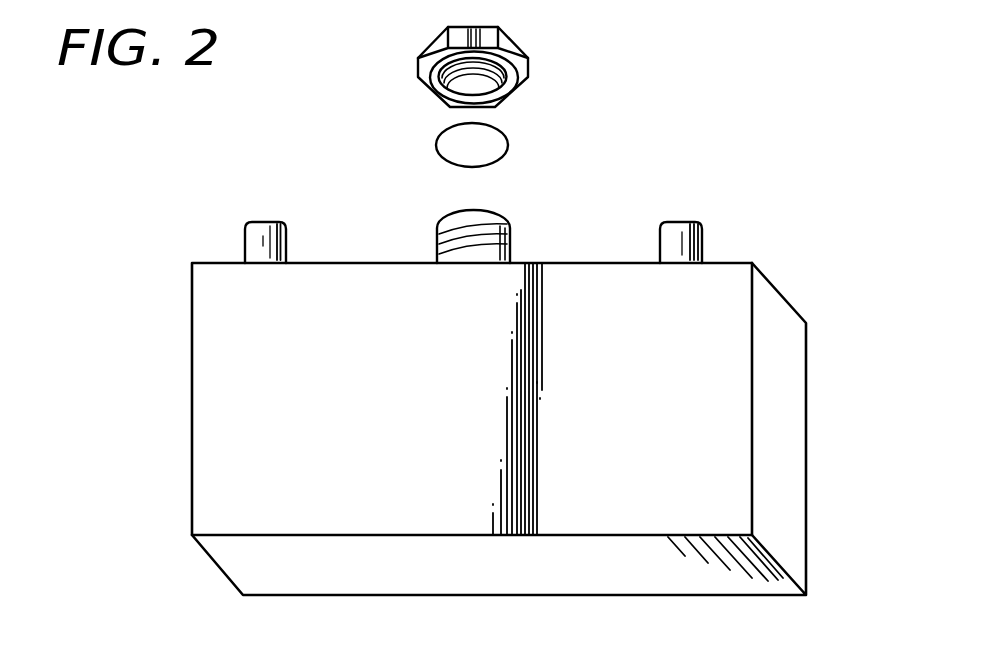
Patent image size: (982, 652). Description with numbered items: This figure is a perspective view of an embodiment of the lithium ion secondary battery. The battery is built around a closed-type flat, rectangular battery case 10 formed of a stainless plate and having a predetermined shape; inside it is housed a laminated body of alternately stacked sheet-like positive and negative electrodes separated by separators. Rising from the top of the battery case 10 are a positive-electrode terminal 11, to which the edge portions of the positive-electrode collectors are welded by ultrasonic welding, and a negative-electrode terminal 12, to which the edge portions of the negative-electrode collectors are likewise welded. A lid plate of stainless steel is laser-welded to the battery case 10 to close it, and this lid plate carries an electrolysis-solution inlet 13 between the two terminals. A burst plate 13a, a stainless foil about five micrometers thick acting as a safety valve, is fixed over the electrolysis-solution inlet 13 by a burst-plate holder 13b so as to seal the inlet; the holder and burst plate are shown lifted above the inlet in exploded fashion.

The flat, rectangular battery case 10 is at (732, 365).
The positive-electrode terminal 11 is at (682, 227).
The negative-electrode terminal 12 is at (262, 227).
The electrolysis-solution inlet 13 is at (505, 223).
The burst plate 13a is at (508, 145).
The burst-plate holder 13b is at (505, 37).